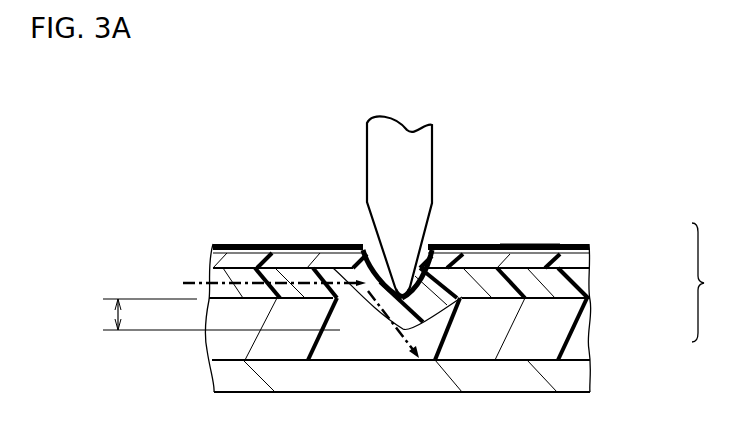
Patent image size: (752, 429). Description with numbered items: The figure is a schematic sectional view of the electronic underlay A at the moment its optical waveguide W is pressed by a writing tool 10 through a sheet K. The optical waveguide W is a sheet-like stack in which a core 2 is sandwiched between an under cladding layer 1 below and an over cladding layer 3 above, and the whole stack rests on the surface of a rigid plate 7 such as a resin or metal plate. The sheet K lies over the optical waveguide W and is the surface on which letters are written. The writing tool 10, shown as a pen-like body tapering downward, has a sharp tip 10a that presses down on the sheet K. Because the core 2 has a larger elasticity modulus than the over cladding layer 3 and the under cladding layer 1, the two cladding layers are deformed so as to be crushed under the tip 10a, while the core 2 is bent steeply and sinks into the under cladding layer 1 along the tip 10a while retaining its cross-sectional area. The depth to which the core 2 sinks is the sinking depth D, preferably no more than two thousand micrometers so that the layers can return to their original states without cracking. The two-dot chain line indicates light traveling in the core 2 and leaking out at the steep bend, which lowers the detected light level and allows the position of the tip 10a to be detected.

The writing tool 10 is at (400, 160).
The tip 10a is at (403, 277).
The over cladding layer 3 is at (573, 261).
The core 2 is at (527, 284).
The under cladding layer 1 is at (558, 330).
The rigid plate 7 is at (573, 375).
The sheet K is at (533, 240).
The electronic underlay A is at (197, 268).
The sinking depth D is at (201, 316).
The optical waveguide W is at (717, 282).